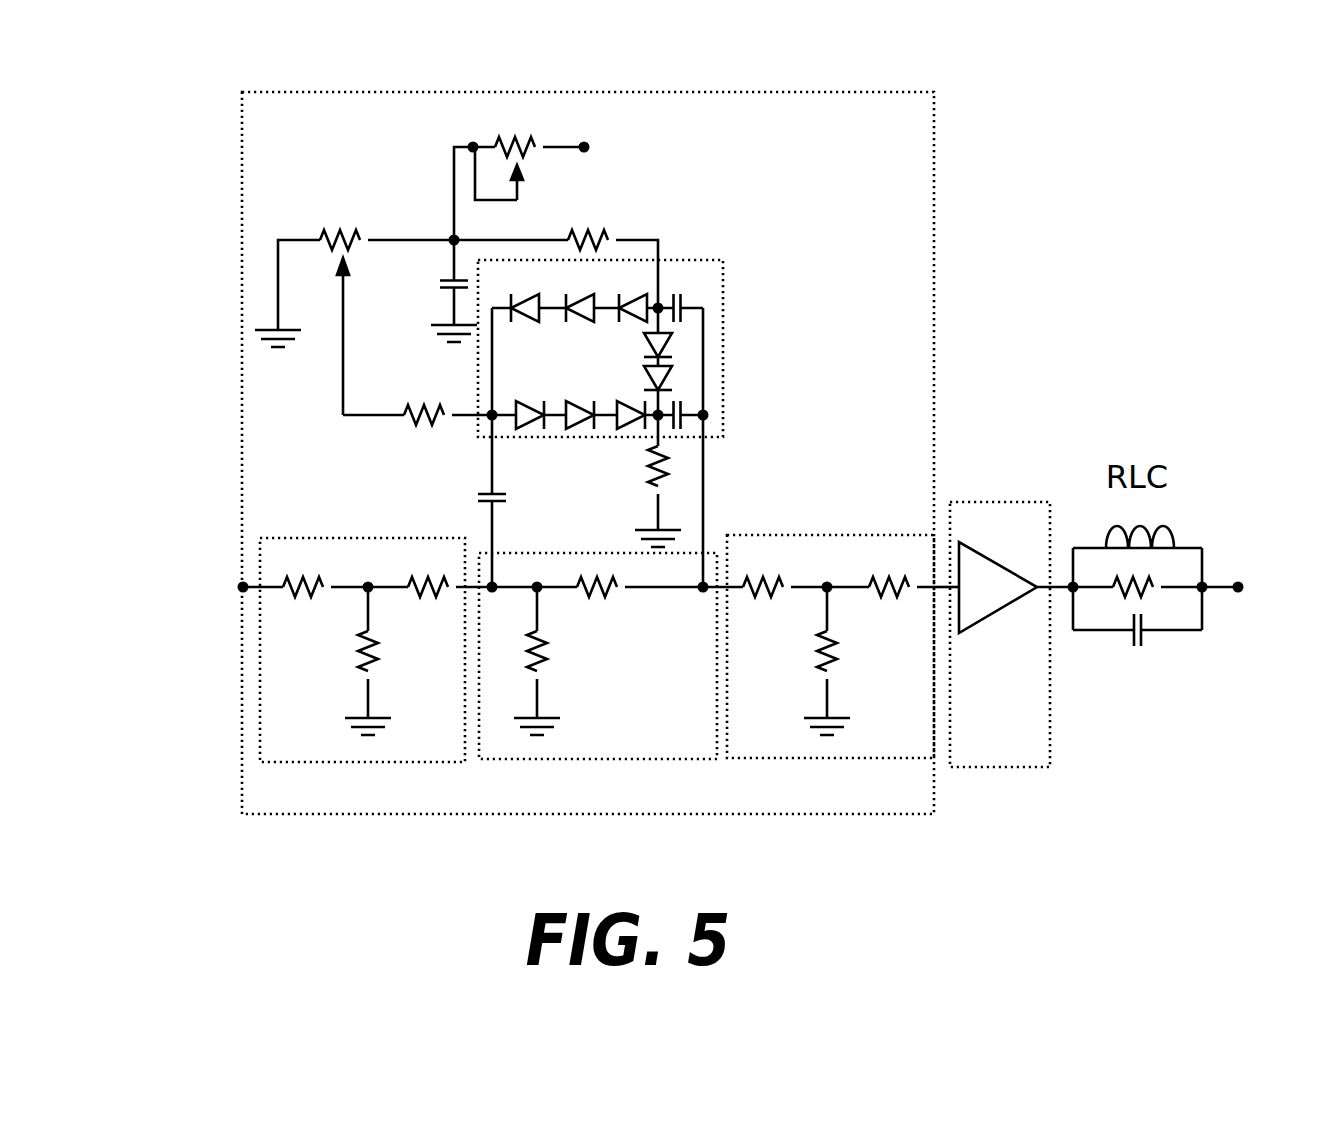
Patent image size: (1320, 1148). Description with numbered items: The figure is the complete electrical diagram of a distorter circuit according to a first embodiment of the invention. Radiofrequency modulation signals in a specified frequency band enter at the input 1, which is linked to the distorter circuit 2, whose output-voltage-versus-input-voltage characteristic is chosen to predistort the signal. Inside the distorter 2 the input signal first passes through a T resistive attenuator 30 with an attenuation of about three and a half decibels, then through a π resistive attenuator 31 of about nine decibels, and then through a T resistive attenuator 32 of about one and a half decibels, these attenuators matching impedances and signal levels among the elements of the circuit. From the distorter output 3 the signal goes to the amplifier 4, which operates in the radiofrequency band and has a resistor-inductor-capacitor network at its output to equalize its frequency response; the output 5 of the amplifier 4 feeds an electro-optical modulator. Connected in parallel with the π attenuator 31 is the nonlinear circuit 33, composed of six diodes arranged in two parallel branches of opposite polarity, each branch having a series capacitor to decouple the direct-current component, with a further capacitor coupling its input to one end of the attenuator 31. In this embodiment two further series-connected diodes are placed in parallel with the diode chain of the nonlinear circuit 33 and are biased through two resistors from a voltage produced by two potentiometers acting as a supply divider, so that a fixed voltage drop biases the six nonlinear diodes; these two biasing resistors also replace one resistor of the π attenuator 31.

The input 1 is at (243, 587).
The distorter circuit 2 is at (937, 315).
The output of predistortion circuit 3 is at (946, 585).
The amplifier 4 is at (991, 502).
The output 5 is at (1238, 584).
The T resistive attenuator 30 is at (362, 539).
The π resistive attenuator 31 is at (597, 556).
The T resistive attenuator 32 is at (826, 537).
The nonlinear circuit 33 is at (724, 367).